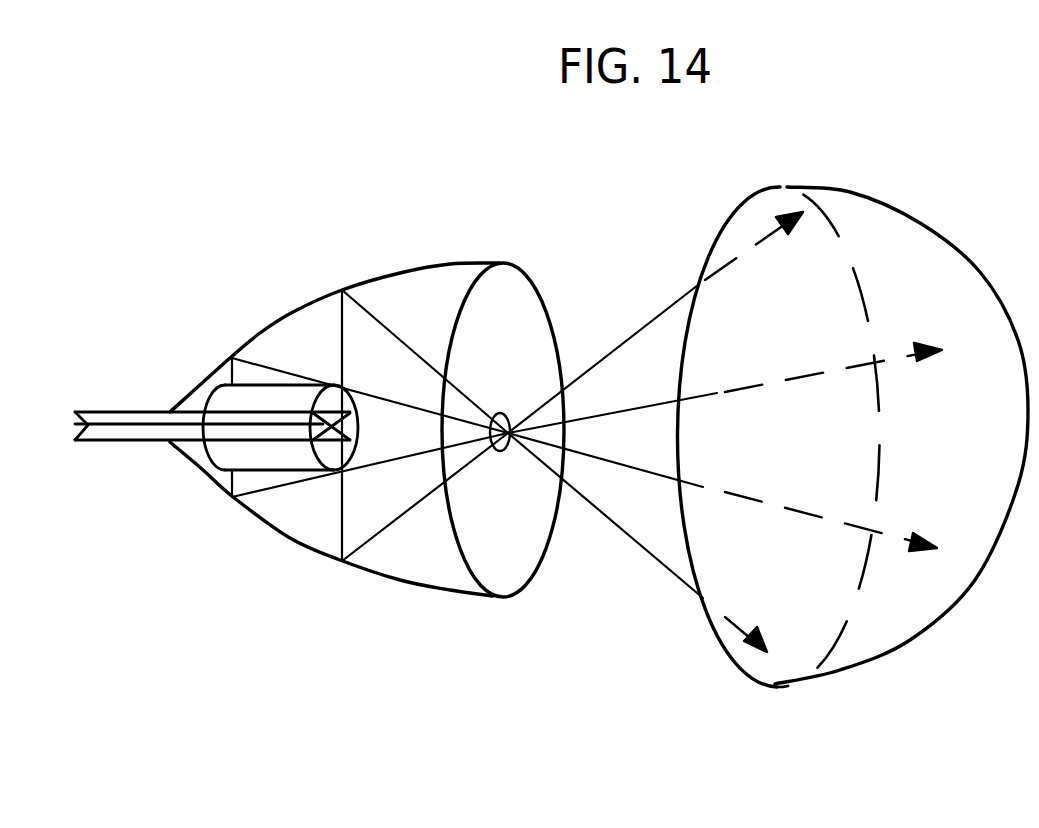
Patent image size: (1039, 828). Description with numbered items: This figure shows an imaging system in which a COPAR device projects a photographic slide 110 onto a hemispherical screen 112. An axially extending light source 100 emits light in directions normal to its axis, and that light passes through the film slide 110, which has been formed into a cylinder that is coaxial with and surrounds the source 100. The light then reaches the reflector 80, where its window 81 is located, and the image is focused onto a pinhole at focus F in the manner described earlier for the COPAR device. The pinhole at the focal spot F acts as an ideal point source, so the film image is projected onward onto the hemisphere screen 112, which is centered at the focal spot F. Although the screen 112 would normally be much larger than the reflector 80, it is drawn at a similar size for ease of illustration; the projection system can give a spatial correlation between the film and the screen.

The reflector 80 is at (410, 584).
The window of reflector 81 is at (511, 296).
The light source 100 is at (119, 406).
The photographic slide 110 is at (262, 392).
The hemispherical screen 112 is at (868, 664).
The focus F is at (500, 452).